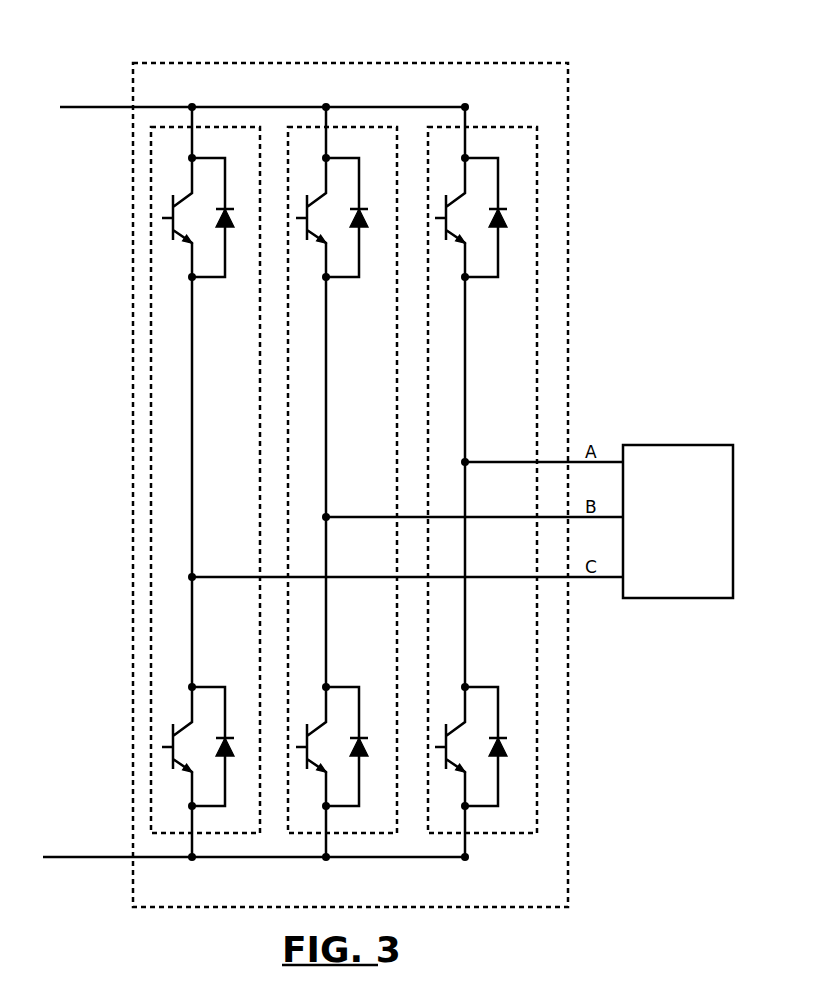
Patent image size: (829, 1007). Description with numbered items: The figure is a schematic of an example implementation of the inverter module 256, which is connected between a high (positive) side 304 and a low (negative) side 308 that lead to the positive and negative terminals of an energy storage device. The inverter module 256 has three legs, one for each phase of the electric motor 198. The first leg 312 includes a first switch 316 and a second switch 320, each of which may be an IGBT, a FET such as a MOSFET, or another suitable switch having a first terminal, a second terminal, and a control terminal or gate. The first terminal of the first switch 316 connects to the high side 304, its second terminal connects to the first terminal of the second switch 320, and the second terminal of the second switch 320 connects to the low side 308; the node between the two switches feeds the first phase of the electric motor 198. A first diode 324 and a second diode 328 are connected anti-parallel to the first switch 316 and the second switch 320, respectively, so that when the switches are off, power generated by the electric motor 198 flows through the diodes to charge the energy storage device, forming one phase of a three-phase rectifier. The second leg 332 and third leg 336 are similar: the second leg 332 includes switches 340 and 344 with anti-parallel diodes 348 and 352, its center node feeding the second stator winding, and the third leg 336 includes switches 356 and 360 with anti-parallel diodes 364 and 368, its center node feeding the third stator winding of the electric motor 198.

The electric motor 198 is at (678, 598).
The inverter module 256 is at (568, 83).
The high side 304 is at (90, 107).
The low side 308 is at (90, 857).
The first leg 312 is at (203, 127).
The first switch 316 is at (159, 180).
The second switch 320 is at (163, 704).
The first diode 324 is at (234, 190).
The second diode 328 is at (235, 707).
The second leg 332 is at (340, 127).
The third leg 336 is at (493, 127).
The switch 340 is at (310, 179).
The switch 344 is at (306, 705).
The anti-parallel diode 348 is at (371, 190).
The anti-parallel diode 352 is at (370, 712).
The switch 356 is at (452, 180).
The switch 360 is at (450, 702).
The anti-parallel diode 364 is at (523, 211).
The anti-parallel diode 368 is at (522, 738).